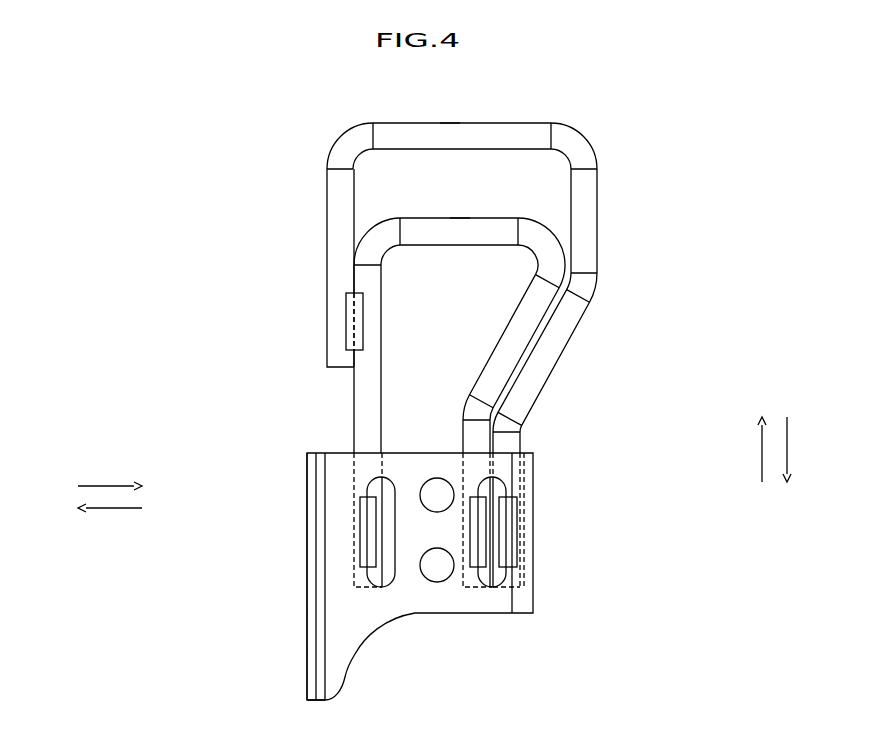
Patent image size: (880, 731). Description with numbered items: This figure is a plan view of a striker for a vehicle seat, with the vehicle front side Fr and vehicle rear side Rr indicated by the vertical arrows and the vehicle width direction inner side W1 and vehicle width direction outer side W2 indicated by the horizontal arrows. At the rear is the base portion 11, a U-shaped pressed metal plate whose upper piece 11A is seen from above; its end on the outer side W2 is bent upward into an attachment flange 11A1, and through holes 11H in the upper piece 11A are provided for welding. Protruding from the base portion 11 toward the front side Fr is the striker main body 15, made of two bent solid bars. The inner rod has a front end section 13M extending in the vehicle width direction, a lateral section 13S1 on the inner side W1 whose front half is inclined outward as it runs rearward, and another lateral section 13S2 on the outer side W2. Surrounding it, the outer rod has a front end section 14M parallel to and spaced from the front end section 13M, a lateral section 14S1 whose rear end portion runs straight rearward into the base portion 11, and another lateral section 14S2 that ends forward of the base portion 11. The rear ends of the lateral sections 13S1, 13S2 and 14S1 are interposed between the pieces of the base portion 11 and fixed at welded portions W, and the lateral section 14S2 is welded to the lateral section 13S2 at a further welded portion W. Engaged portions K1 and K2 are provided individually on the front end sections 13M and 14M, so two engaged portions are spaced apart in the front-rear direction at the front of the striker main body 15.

The base portion 11 is at (567, 634).
The upper piece 11A is at (414, 477).
The attachment flange 11A1 is at (312, 587).
The through holes 11H is at (372, 517).
The front end section of the inner rod 13M is at (497, 235).
The one lateral section of the inner rod 13S1 is at (515, 338).
The other lateral section of the inner rod 13S2 is at (363, 393).
The front end section of the outer rod 14M is at (520, 137).
The one lateral section of the outer rod 14S1 is at (587, 232).
The other lateral section of the outer rod 14S2 is at (343, 237).
The striker main body 15 is at (634, 281).
The engaged portion K1 is at (457, 216).
The engaged portion K2 is at (447, 119).
The welded portions W is at (353, 322).
The vehicle width direction inner side W1 is at (95, 483).
The vehicle width direction outer side W2 is at (95, 511).
The vehicle front side Fr is at (762, 465).
The vehicle rear side Rr is at (793, 465).